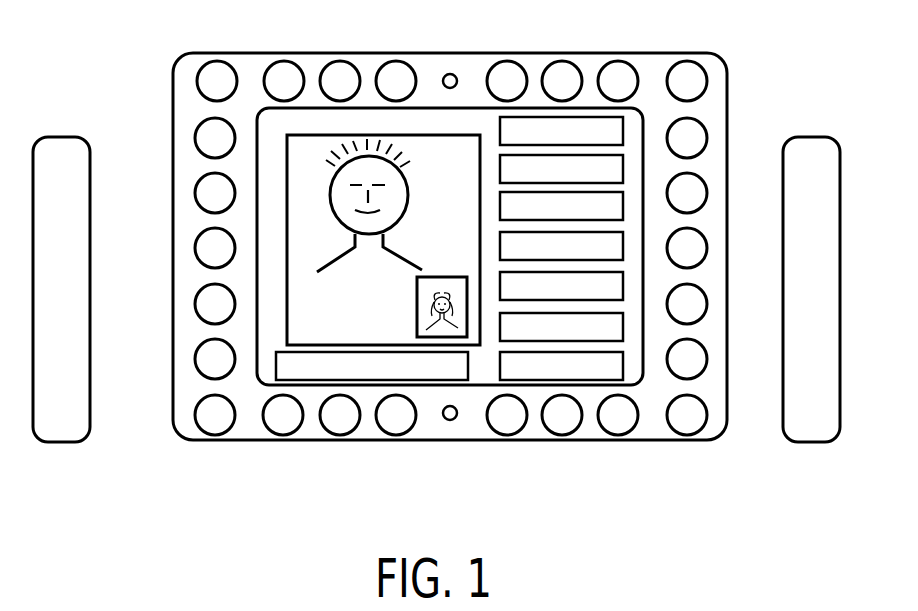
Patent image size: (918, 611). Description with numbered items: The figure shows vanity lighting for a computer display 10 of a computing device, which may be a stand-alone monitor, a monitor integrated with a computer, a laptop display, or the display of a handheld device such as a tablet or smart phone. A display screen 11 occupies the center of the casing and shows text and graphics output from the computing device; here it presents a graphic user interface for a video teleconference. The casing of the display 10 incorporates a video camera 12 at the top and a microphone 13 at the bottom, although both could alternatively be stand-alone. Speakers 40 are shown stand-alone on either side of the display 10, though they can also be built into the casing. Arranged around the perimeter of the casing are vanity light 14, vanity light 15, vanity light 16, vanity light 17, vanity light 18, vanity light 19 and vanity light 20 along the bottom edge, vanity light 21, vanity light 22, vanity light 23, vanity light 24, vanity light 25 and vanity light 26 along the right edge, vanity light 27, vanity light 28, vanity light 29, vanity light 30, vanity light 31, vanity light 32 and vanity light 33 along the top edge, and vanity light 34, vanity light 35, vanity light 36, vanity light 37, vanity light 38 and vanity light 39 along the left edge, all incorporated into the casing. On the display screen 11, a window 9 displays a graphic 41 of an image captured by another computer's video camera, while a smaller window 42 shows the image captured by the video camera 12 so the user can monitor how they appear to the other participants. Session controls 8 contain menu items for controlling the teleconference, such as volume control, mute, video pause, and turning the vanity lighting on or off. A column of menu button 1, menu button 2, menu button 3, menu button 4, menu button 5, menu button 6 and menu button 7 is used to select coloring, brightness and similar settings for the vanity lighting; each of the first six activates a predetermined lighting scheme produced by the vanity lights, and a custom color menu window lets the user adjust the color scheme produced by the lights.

The menu button 1 is at (500, 135).
The menu button 2 is at (500, 170).
The menu button 3 is at (500, 207).
The menu button 4 is at (500, 246).
The menu button 5 is at (500, 286).
The menu button 6 is at (500, 326).
The menu button 7 is at (500, 364).
The session controls 8 is at (487, 350).
The window 9 is at (287, 315).
The computer display 10 is at (183, 441).
The display screen 11 is at (262, 384).
The video camera 12 is at (451, 74).
The microphone 13 is at (448, 421).
The vanity light 14 is at (275, 434).
The vanity light 15 is at (333, 435).
The vanity light 16 is at (393, 435).
The vanity light 17 is at (502, 434).
The vanity light 18 is at (551, 433).
The vanity light 19 is at (617, 435).
The vanity light 20 is at (680, 435).
The vanity light 21 is at (704, 350).
The vanity light 22 is at (704, 293).
The vanity light 23 is at (704, 237).
The vanity light 24 is at (704, 182).
The vanity light 25 is at (704, 127).
The vanity light 26 is at (706, 74).
The vanity light 27 is at (618, 61).
The vanity light 28 is at (562, 61).
The vanity light 29 is at (507, 61).
The vanity light 30 is at (396, 61).
The vanity light 31 is at (340, 61).
The vanity light 32 is at (284, 61).
The vanity light 33 is at (217, 61).
The vanity light 34 is at (196, 137).
The vanity light 35 is at (196, 192).
The vanity light 36 is at (196, 248).
The vanity light 37 is at (196, 303).
The vanity light 38 is at (196, 358).
The vanity light 39 is at (196, 414).
The speakers 40 is at (52, 444).
The graphic 41 is at (347, 273).
The window 42 is at (415, 322).